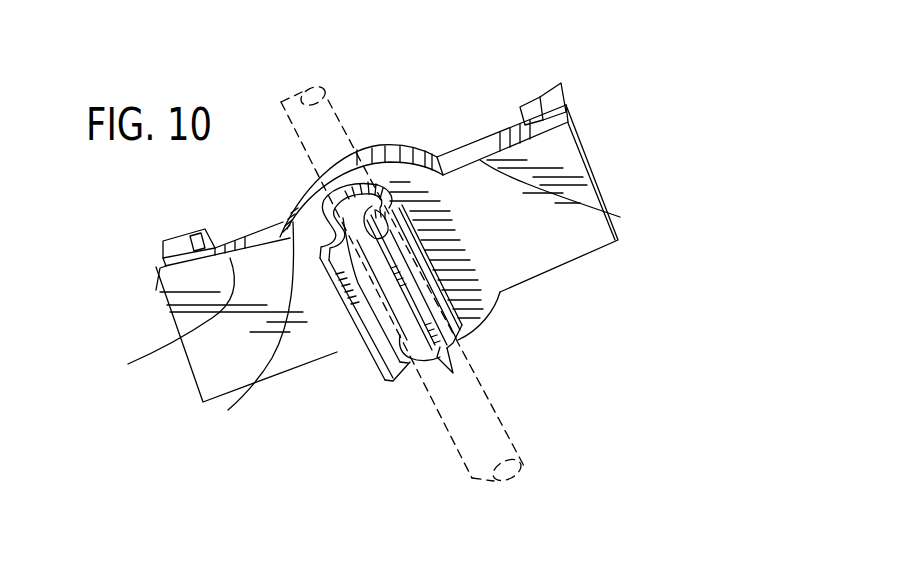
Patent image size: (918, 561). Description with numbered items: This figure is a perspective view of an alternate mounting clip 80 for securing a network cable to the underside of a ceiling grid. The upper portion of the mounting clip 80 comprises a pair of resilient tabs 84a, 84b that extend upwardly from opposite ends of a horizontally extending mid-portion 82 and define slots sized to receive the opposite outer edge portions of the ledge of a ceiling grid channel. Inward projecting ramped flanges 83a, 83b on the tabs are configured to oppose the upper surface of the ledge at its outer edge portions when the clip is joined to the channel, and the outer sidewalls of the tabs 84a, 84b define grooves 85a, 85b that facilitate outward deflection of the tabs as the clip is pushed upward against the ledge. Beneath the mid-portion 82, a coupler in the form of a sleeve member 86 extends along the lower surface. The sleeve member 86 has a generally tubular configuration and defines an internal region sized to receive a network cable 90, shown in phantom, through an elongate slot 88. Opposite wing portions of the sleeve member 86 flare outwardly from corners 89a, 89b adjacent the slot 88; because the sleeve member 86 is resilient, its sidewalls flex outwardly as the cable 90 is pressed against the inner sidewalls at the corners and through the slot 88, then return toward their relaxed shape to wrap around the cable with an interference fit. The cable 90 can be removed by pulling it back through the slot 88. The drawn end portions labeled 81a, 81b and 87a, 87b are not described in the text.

The mounting clip 80 is at (660, 165).
The first end plate 81a is at (128, 364).
The second end plate 81b is at (620, 217).
The mid-portion 82 is at (399, 145).
The ramped flange 83a is at (202, 229).
The ramped flange 83b is at (524, 108).
The resilient tab 84a is at (163, 250).
The resilient tab 84b is at (558, 112).
The groove 85a is at (158, 265).
The groove 85b is at (560, 112).
The sleeve member 86 is at (424, 342).
The first clip foot 87a is at (400, 372).
The second clip foot 87b is at (443, 360).
The elongate slot 88 is at (424, 354).
The corner 89a is at (347, 282).
The corner 89b is at (392, 200).
The network cable 90 is at (424, 342).